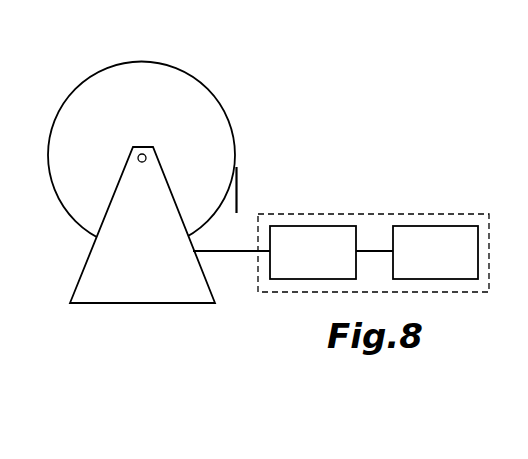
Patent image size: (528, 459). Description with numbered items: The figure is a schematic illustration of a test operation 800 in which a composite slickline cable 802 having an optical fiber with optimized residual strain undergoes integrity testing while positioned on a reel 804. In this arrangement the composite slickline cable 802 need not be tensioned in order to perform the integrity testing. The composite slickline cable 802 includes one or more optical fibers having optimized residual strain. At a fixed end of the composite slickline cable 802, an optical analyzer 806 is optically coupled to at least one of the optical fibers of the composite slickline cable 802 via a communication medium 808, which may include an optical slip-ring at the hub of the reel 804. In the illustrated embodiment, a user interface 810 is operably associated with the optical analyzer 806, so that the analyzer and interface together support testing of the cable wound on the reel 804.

The test operation 800 is at (261, 99).
The composite slickline cable 802 is at (238, 193).
The reel 804 is at (202, 90).
The optical analyzer 806 is at (317, 226).
The communication medium 808 is at (237, 253).
The user interface 810 is at (437, 226).